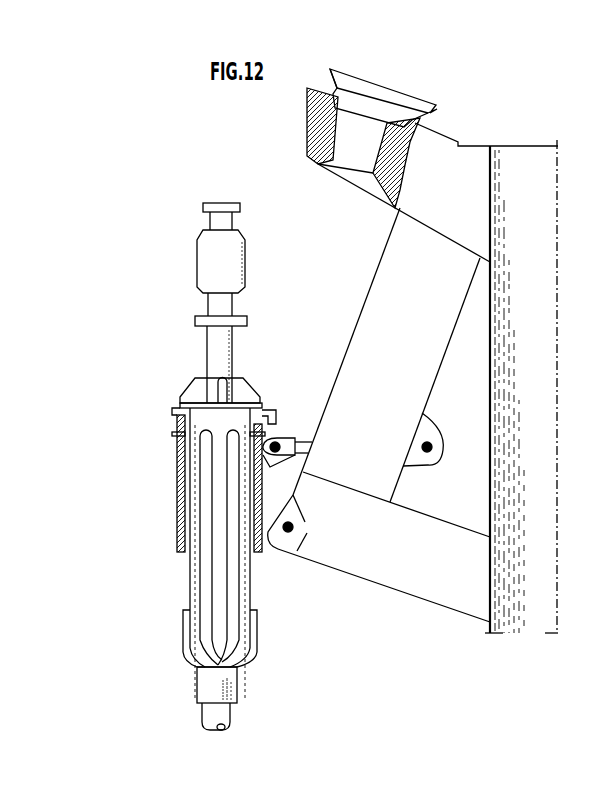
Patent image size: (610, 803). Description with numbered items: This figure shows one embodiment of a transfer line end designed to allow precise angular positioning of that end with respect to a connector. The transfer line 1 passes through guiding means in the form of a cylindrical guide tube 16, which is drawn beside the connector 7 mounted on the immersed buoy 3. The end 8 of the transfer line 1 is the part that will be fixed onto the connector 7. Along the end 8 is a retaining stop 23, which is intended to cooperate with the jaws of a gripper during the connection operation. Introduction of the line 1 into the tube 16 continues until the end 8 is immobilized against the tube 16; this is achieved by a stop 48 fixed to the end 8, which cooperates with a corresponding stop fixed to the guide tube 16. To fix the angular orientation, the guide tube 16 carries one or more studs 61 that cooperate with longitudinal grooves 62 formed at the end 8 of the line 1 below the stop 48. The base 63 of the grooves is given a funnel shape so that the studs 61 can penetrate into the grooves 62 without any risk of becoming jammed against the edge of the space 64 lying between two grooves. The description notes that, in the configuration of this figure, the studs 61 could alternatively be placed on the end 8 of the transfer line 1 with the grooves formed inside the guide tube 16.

The transfer line 1 is at (233, 720).
The immersed buoy 3 is at (510, 624).
The connector 7 is at (460, 103).
The end of the transfer line 8 is at (173, 260).
The cylindrical guide tube 16 is at (177, 525).
The retaining stop 23 is at (194, 320).
The stop 48 is at (197, 390).
The studs 61 is at (172, 434).
The longitudinal grooves 62 is at (227, 568).
The base of the grooves 63 is at (223, 667).
The space between two grooves 64 is at (220, 640).